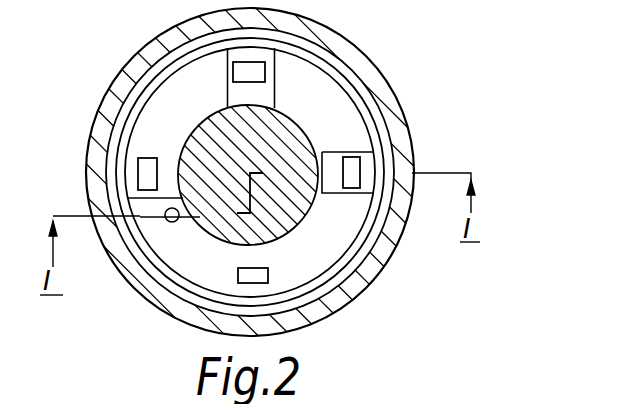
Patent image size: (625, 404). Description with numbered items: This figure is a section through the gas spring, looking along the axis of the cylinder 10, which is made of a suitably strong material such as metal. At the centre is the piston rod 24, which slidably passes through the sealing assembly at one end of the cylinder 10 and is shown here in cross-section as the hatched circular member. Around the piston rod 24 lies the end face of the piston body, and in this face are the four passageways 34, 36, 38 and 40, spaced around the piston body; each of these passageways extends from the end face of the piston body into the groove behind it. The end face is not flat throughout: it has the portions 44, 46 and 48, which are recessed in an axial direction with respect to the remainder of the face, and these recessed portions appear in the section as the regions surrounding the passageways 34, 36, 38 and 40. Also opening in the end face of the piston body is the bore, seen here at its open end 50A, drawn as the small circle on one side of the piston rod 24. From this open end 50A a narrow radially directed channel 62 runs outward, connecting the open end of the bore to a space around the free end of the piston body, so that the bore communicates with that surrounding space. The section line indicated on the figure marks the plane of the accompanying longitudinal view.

The cylinder 10 is at (332, 38).
The piston rod 24 is at (303, 213).
The passageway 34 is at (350, 168).
The passageway 36 is at (253, 276).
The passageway 38 is at (148, 177).
The passageway 40 is at (242, 73).
The recessed portion 44 is at (340, 234).
The recessed portion 46 is at (167, 113).
The recessed portion 48 is at (345, 123).
The open end of bore 50A is at (174, 223).
The radially directed channel 62 is at (140, 216).